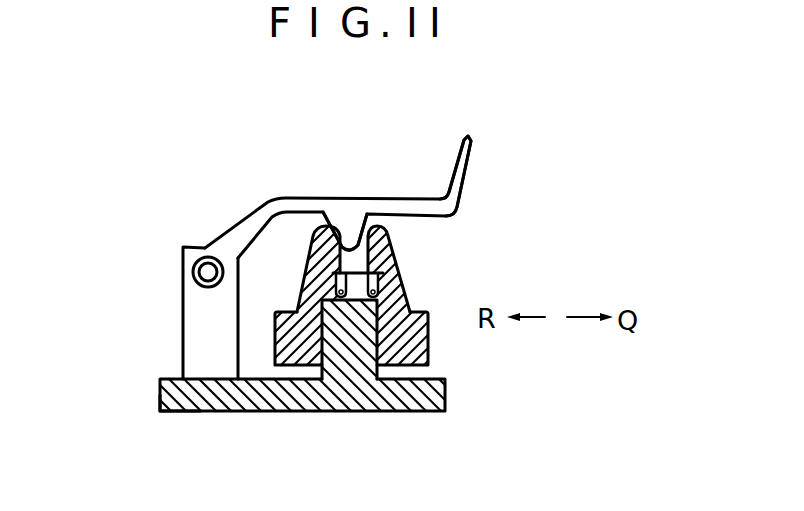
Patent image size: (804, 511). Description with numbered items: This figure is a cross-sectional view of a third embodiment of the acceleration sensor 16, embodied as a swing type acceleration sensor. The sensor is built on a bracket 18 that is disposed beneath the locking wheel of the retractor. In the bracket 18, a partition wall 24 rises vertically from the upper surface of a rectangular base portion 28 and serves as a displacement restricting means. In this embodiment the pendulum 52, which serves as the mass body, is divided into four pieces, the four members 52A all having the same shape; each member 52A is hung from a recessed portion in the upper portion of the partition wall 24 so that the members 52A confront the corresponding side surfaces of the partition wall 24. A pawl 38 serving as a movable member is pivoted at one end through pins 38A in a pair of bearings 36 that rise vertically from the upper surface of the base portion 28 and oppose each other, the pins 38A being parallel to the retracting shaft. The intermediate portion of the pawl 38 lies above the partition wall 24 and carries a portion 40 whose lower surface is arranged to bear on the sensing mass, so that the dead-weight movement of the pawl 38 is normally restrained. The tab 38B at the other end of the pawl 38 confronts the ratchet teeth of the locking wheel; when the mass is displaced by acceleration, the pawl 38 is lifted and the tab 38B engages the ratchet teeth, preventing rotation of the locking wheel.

The acceleration sensor 16 is at (120, 270).
The bracket 18 is at (456, 411).
The partition wall 24 is at (395, 332).
The base portion 28 is at (160, 395).
The bearing 36 is at (200, 342).
The pawl 38 is at (297, 182).
The pin 38A is at (200, 263).
The tab 38B is at (470, 163).
The portion 40 is at (355, 225).
The pendulum 52 is at (421, 289).
The pendulum member 52A is at (290, 347).